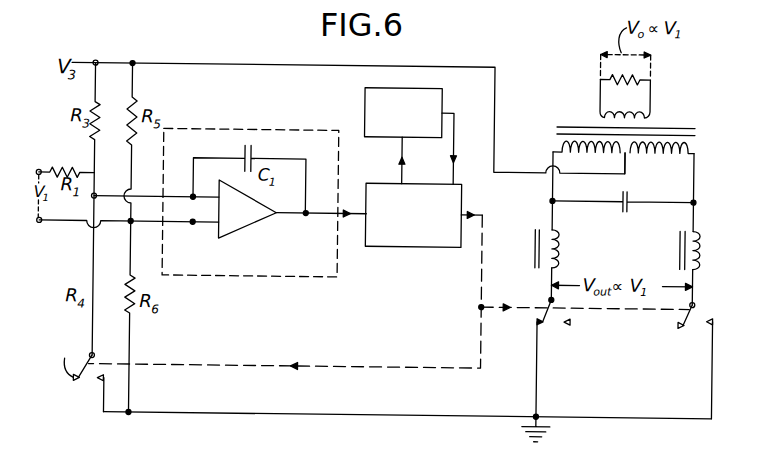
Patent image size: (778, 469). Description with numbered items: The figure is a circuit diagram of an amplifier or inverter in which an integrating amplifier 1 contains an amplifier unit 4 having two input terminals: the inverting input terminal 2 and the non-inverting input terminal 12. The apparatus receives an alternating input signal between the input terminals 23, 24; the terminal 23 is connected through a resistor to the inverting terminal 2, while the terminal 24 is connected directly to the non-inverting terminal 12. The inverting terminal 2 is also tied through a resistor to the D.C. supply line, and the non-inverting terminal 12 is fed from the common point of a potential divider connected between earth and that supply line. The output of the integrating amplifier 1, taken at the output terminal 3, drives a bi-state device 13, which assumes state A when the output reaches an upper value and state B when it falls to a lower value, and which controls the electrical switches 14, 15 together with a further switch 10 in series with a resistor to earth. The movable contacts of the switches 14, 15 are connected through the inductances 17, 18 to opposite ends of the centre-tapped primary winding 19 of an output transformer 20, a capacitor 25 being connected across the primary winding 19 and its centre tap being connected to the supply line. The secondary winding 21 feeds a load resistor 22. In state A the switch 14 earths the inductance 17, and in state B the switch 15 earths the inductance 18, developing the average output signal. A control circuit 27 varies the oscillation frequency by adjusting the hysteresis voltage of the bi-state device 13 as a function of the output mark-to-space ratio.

The integrating amplifier 1 is at (292, 112).
The input terminal 2 is at (193, 197).
The output terminal of amplifier 3 is at (306, 216).
The amplifier unit 4 is at (246, 228).
The input switch 10 is at (86, 374).
The input terminal 12 is at (193, 226).
The bi-state device 13 is at (461, 194).
The electrical switch 14 is at (551, 310).
The electrical switch 15 is at (685, 323).
The inductance 17 is at (535, 241).
The inductance 18 is at (680, 244).
The primary winding 19 is at (608, 146).
The output transformer 20 is at (695, 120).
The secondary winding 21 is at (632, 103).
The load resistor 22 is at (609, 74).
The input terminal 23 is at (38, 172).
The input terminal 24 is at (40, 227).
The capacitor 25 is at (619, 206).
The control circuit 27 is at (441, 90).